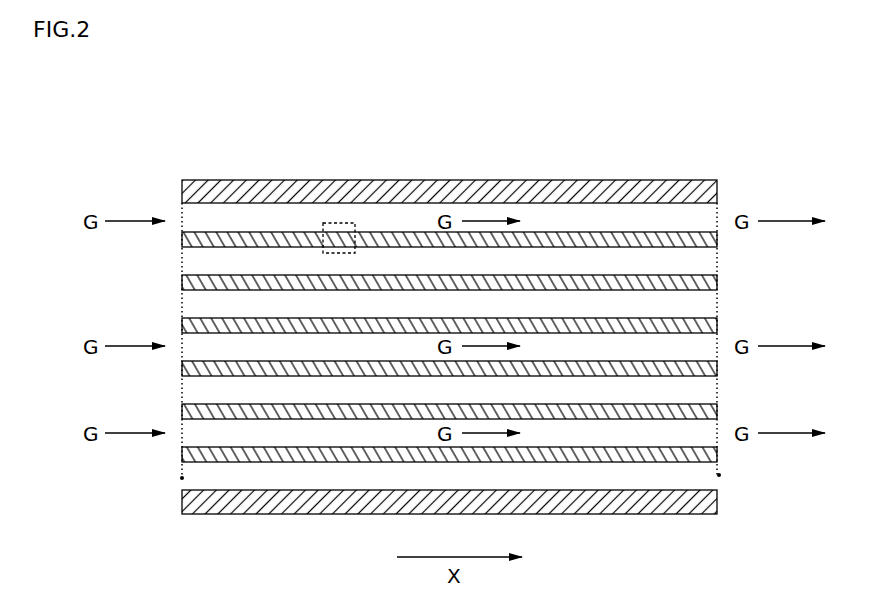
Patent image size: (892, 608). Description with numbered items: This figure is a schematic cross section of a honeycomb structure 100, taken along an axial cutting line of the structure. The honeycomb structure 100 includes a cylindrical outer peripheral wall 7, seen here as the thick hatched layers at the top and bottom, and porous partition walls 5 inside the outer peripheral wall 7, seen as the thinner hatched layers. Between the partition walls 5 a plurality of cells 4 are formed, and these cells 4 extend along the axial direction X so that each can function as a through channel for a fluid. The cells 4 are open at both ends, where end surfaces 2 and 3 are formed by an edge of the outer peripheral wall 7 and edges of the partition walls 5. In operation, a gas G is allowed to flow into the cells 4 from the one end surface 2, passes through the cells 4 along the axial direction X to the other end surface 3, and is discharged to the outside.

The honeycomb structure 100 is at (705, 108).
The outer peripheral wall 7 is at (260, 180).
The partition walls 5 is at (181, 280).
The cells 4 is at (182, 292).
The end surface 2 is at (182, 478).
The end surface 3 is at (719, 475).